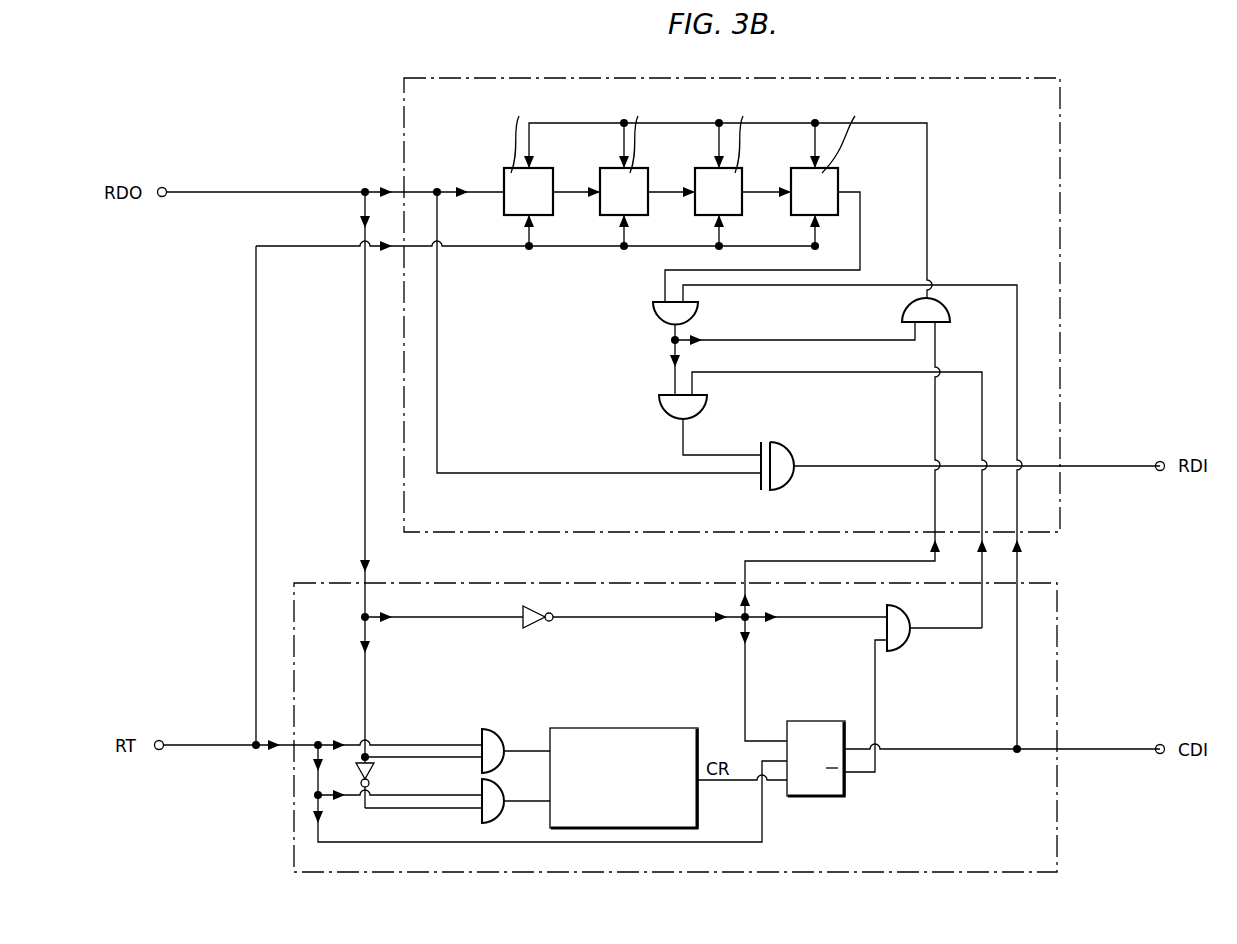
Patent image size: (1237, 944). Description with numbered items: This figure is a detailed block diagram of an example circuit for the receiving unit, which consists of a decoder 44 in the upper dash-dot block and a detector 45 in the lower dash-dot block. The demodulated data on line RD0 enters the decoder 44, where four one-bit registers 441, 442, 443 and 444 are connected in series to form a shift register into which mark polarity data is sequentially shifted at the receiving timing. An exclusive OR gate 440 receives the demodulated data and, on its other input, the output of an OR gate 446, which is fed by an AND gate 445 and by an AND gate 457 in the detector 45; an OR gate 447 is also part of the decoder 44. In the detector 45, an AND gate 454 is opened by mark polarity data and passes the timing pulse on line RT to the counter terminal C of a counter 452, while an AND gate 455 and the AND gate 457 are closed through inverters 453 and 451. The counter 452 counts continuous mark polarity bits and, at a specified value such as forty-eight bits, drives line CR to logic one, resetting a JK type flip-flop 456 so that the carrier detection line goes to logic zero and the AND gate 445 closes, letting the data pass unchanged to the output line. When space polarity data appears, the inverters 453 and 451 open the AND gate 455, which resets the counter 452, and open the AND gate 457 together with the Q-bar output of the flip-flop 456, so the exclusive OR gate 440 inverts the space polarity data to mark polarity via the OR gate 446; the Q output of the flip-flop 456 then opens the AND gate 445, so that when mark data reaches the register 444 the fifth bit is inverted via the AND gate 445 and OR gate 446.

The decoder 44 is at (1057, 143).
The detector 45 is at (1053, 650).
The exclusive OR gate 440 is at (786, 445).
The 1-bit register 441 is at (548, 168).
The 1-bit register 442 is at (641, 168).
The 1-bit register 443 is at (731, 168).
The 1-bit register 444 is at (835, 168).
The AND gate 445 is at (698, 312).
The OR gate 446 is at (661, 417).
The OR gate 447 is at (940, 324).
The inverter 451 is at (540, 628).
The counter 452 is at (663, 728).
The inverter 453 is at (378, 771).
The AND gate 454 is at (495, 729).
The AND gate 455 is at (492, 823).
The JK type flip-flop 456 is at (843, 797).
The AND gate 457 is at (908, 652).